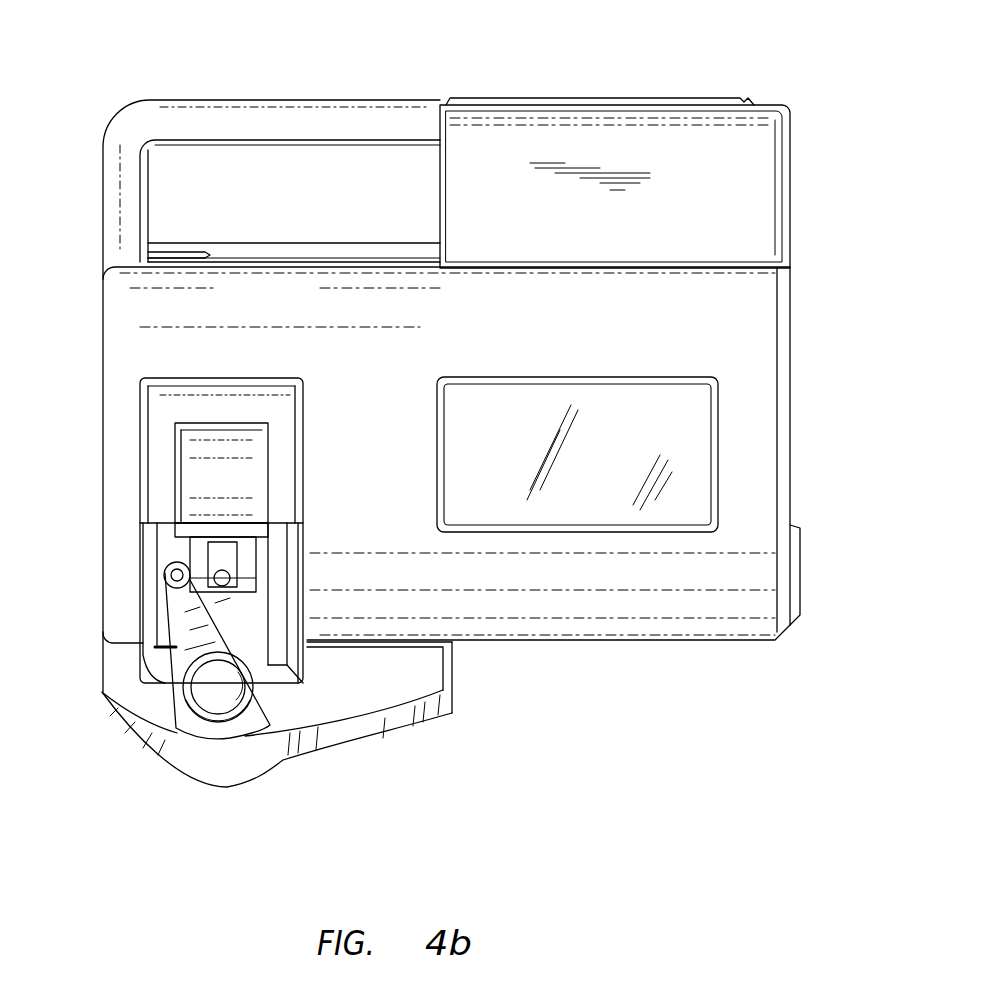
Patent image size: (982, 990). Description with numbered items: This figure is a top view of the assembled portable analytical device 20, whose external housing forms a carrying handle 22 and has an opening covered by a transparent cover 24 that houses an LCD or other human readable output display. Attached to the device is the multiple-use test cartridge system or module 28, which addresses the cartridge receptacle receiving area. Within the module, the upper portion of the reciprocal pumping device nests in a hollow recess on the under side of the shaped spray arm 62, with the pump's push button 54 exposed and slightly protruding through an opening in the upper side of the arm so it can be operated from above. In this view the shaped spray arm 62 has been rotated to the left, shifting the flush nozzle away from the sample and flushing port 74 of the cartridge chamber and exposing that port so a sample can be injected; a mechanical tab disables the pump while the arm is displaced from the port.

The portable analytical device 20 is at (818, 166).
The carrying handle 22 is at (297, 107).
The transparent cover 24 is at (617, 397).
The multiple-use test cartridge system or module 28 is at (385, 770).
The push button 54 is at (197, 687).
The shaped spray arm 62 is at (157, 647).
The sample and flushing port 74 is at (215, 578).